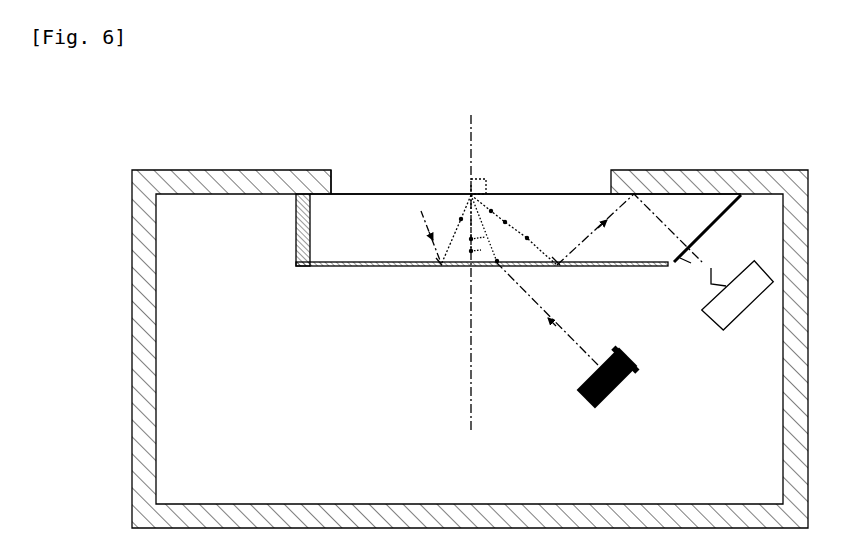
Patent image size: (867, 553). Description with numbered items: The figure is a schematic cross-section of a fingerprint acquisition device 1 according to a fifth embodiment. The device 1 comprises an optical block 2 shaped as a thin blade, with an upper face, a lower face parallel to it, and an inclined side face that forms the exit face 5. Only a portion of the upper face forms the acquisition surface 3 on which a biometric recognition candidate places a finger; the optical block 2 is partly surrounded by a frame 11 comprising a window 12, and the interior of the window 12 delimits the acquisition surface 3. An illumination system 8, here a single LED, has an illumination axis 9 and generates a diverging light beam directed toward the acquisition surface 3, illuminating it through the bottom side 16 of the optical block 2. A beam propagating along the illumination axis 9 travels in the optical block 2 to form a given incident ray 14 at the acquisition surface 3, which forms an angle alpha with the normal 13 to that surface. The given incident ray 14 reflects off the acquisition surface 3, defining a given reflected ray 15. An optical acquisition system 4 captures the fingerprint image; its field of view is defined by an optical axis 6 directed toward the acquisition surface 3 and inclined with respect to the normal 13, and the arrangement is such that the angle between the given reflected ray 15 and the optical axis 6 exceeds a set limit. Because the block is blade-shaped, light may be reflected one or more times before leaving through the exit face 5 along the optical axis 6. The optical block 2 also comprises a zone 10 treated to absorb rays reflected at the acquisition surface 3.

The device 1 is at (433, 349).
The optical block 2 is at (493, 219).
The acquisition surface 3 is at (568, 188).
The optical acquisition system 4 is at (712, 327).
The exit face 5 is at (717, 218).
The optical axis 6 is at (711, 268).
The illumination system 8 is at (617, 388).
The illumination axis 9 is at (583, 353).
The zone treated to absorb light rays 10 is at (293, 233).
The frame 11 is at (145, 213).
The window 12 is at (331, 182).
The normal 13 is at (473, 133).
The given incident ray 14 is at (497, 264).
The given reflected ray 15 is at (455, 193).
The bottom side 16 is at (365, 267).